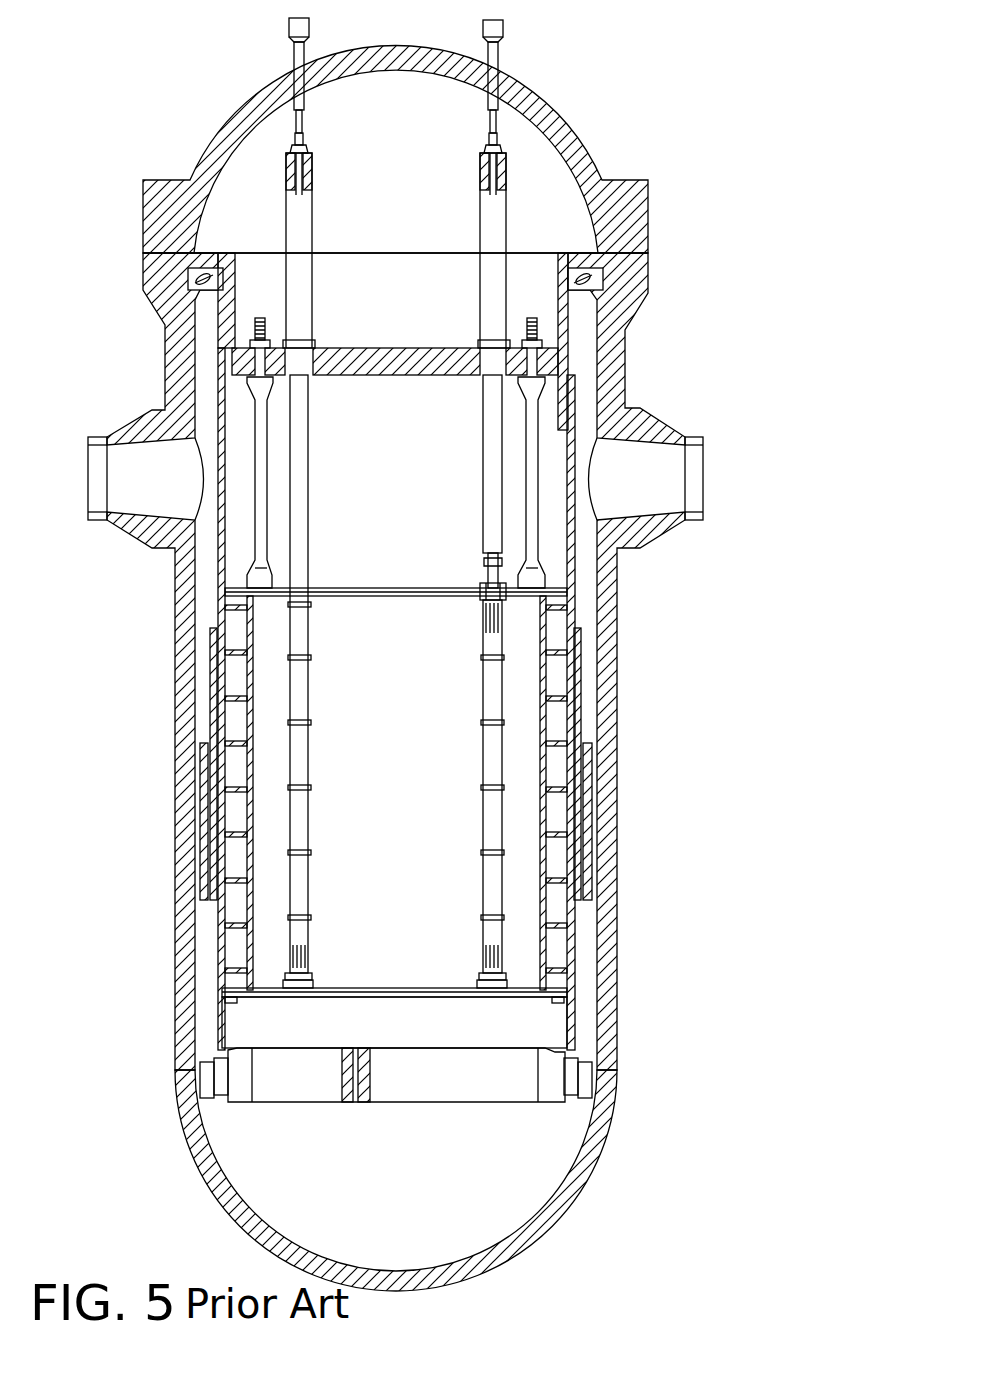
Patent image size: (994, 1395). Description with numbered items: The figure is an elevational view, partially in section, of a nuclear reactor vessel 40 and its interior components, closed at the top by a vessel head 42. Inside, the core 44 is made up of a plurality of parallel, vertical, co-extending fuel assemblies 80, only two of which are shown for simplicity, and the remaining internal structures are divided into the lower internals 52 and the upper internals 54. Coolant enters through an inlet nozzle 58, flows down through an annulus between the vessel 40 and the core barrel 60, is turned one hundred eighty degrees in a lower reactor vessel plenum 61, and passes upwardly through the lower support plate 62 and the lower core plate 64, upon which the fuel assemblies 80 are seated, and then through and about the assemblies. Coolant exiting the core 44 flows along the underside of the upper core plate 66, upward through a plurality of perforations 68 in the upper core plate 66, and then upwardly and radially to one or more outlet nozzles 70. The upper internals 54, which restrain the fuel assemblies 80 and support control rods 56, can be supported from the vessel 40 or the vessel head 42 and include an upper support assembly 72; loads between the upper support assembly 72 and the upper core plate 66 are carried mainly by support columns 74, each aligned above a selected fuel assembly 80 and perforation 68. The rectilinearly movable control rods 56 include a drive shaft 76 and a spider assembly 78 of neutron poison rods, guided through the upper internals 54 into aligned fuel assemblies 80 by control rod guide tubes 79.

The reactor vessel 40 is at (618, 665).
The vessel head 42 is at (648, 205).
The core 44 is at (416, 788).
The lower internals 52 is at (416, 1038).
The upper internals 54 is at (416, 453).
The control rods 56 is at (480, 600).
The inlet nozzle 58 is at (125, 420).
The core barrel 60 is at (195, 583).
The lower reactor vessel plenum 61 is at (557, 1152).
The lower support plate 62 is at (435, 1088).
The lower core plate 64 is at (455, 988).
The upper core plate 66 is at (420, 597).
The perforations 68 is at (352, 587).
The outlet nozzles 70 is at (653, 427).
The upper support assembly 72 is at (568, 252).
The support columns 74 is at (267, 473).
The drive shaft 76 is at (485, 560).
The spider assembly 78 is at (480, 583).
The control rod guide tubes 79 is at (482, 507).
The fuel assemblies 80 is at (318, 690).